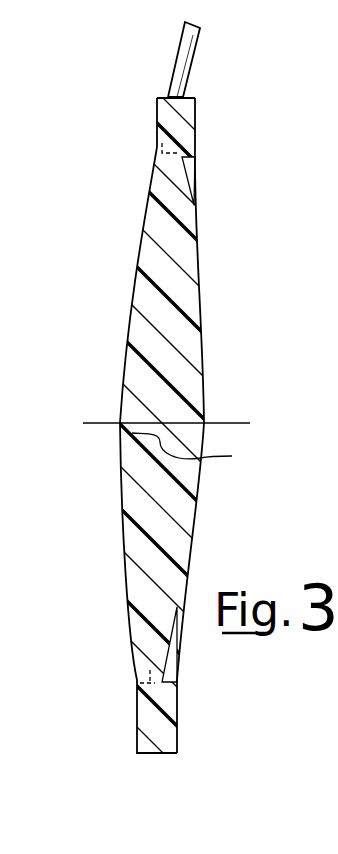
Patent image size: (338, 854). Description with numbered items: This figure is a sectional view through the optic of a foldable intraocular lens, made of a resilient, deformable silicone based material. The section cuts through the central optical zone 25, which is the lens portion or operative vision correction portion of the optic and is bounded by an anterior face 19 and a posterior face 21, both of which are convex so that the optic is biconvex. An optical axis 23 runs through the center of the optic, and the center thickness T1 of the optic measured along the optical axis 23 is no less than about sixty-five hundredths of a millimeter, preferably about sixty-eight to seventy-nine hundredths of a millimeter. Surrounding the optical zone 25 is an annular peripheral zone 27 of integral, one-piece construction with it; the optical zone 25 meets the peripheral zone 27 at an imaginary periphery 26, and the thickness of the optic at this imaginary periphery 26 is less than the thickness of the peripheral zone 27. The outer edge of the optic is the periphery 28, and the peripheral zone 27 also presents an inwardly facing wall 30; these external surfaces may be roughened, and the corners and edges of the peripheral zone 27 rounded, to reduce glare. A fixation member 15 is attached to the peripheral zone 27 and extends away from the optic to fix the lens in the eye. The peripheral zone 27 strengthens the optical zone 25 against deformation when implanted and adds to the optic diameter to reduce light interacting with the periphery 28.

The fixation member 15 is at (192, 62).
The anterior face 19 is at (205, 368).
The posterior face 21 is at (130, 292).
The optical axis 23 is at (102, 420).
The central optical zone 25 is at (137, 371).
The imaginary periphery 26 is at (153, 140).
The annular peripheral zone 27 is at (185, 127).
The periphery 28 is at (157, 98).
The inwardly facing wall 30 is at (193, 170).
The center thickness T1 is at (203, 454).